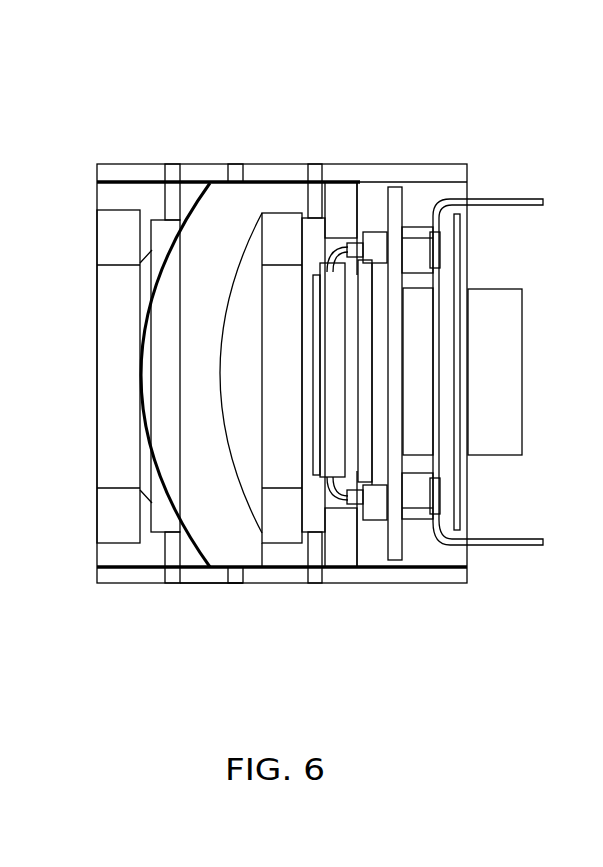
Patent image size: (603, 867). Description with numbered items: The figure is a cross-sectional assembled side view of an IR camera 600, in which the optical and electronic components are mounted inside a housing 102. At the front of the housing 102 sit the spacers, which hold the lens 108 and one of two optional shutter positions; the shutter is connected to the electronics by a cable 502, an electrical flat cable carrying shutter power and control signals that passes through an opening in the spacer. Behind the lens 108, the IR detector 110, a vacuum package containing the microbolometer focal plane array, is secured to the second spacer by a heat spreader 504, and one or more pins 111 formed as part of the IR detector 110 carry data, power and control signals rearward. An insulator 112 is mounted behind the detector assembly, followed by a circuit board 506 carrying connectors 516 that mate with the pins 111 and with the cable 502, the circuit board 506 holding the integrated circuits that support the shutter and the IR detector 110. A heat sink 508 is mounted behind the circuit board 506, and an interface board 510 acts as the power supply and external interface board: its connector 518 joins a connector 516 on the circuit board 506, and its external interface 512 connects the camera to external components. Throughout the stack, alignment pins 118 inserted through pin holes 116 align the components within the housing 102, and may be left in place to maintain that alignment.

The housing 102 is at (97, 165).
The lens 108 is at (214, 196).
The alignment pins 118 is at (177, 178).
The IR detector 110 is at (294, 428).
The insulator 112 is at (377, 196).
The pins 111 is at (348, 258).
The circuit board 506 is at (372, 467).
The connectors 516 is at (377, 510).
The heat spreader 504 is at (400, 462).
The cable 502 is at (424, 208).
The connector 518 is at (420, 310).
The heat sink 508 is at (526, 199).
The interface board 510 is at (465, 471).
The external interface 512 is at (512, 388).
The pin holes 116 is at (228, 587).
The IR camera 600 is at (488, 654).